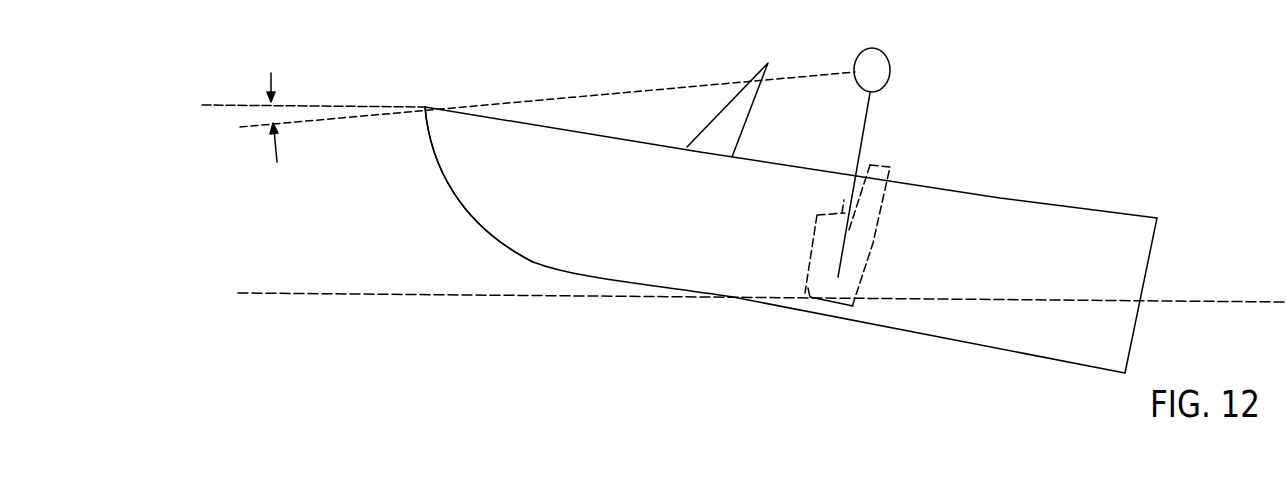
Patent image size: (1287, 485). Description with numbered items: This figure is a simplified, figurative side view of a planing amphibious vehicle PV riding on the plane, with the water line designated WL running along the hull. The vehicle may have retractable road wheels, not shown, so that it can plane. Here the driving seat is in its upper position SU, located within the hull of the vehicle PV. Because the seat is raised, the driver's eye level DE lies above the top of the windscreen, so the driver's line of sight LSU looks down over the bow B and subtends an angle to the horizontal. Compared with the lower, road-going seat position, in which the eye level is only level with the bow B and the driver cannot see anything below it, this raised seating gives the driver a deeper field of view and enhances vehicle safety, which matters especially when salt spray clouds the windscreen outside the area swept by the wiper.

The planing amphibious vehicle PV is at (1128, 196).
The bow B is at (431, 90).
The driver's line of sight LSU is at (502, 115).
The driver's eye level DE is at (853, 66).
The upper position of the seat SU is at (862, 228).
The water line WL is at (1220, 310).